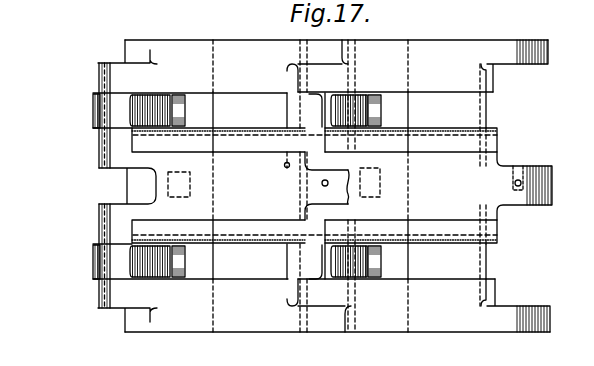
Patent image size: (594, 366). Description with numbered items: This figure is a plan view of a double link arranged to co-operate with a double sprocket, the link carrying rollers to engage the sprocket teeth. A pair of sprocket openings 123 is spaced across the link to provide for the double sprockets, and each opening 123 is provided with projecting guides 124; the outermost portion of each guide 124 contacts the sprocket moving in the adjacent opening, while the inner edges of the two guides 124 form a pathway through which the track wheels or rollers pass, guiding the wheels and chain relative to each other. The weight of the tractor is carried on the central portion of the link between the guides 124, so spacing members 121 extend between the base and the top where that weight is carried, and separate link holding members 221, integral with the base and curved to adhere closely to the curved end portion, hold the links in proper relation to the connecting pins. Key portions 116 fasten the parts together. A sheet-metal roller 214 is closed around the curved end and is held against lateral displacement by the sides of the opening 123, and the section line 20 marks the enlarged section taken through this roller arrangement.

The section line 20 is at (228, 260).
The key portion 116 is at (188, 190).
The spacing member 121 is at (290, 166).
The sprocket opening 123 is at (235, 103).
The projecting guide 124 is at (234, 216).
The roller 214 is at (96, 120).
The link holding member 221 is at (287, 77).